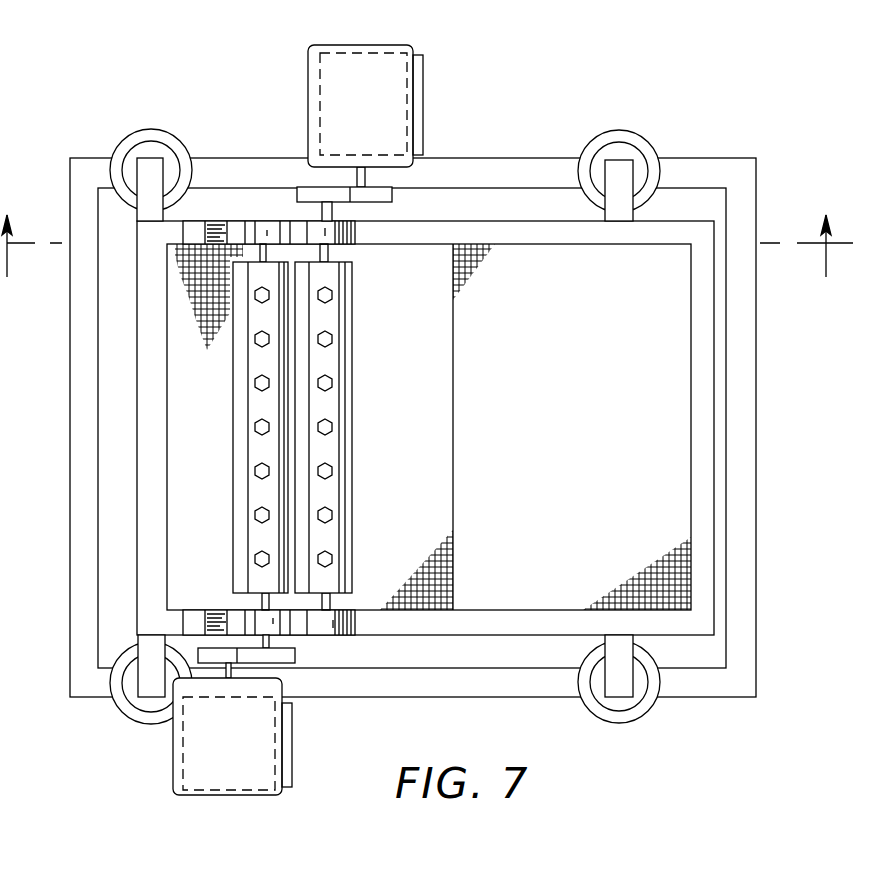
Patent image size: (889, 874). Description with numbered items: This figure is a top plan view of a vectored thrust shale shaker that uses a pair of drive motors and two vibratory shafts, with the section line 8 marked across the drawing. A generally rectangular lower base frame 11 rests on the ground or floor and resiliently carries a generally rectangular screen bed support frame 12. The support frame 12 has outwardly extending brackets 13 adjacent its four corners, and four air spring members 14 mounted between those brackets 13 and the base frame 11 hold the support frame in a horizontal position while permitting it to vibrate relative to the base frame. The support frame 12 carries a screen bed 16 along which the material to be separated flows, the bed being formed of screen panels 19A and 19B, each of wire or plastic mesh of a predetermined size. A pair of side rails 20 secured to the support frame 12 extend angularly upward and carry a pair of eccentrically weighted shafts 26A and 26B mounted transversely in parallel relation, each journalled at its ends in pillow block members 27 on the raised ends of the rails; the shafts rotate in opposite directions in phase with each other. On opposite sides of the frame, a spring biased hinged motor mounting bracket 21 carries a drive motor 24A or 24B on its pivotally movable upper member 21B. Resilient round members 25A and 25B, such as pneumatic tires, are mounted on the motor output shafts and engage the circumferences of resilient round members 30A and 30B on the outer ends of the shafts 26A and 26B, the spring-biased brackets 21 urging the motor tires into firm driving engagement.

The section line 8- 8 is at (426, 261).
The lower base frame 11 is at (757, 513).
The screen bed support frame 12 is at (715, 440).
The brackets 13 is at (152, 167).
The air spring members 14 is at (152, 131).
The screen bed 16 is at (672, 443).
The screen panel 19A is at (420, 468).
The screen panel 19B is at (557, 417).
The side rails 20 is at (223, 228).
The spring biased hinged motor mounting bracket 21 is at (425, 56).
The upper member 21B is at (420, 102).
The drive motor 24A is at (382, 117).
The drive motor 24B is at (253, 757).
The resilient round member 25A is at (392, 197).
The resilient round member 25B is at (210, 660).
The eccentrically weighted shaft 26A is at (352, 350).
The eccentrically weighted shaft 26B is at (235, 490).
The pillow block members 27 is at (337, 232).
The resilient round member 30A is at (302, 197).
The resilient round member 30B is at (295, 656).